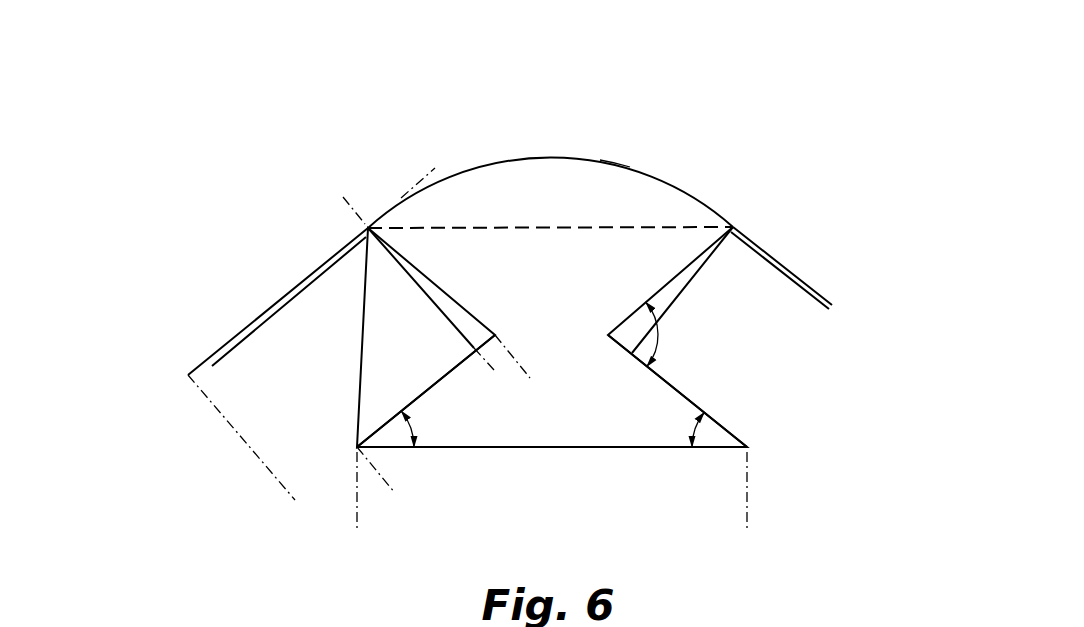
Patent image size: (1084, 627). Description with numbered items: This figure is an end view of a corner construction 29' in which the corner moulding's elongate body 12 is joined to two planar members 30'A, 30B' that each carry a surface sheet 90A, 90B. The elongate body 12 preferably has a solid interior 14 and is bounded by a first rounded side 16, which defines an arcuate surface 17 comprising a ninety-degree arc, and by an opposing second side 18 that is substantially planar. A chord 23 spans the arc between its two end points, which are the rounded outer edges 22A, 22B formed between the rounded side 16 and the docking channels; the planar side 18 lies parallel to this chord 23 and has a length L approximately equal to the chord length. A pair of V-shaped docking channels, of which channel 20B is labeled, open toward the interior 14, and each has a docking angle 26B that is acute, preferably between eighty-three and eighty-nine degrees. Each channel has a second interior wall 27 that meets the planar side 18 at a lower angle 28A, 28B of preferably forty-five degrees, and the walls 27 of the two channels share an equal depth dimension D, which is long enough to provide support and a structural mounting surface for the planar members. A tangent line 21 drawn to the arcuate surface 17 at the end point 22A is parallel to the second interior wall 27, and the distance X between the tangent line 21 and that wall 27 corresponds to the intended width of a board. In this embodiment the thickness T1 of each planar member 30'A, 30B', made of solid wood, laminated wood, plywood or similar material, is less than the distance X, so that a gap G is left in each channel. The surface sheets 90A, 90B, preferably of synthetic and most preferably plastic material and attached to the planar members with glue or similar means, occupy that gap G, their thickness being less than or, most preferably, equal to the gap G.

The elongate body 12 is at (578, 360).
The interior 14 is at (539, 288).
The first rounded side 16 is at (678, 186).
The arcuate surface 17 is at (615, 163).
The second side 18 is at (611, 450).
The V-shaped docking channel 20B is at (706, 310).
The tangent line 21 is at (427, 177).
The rounded outer edge 22A is at (368, 227).
The rounded outer edge 22B is at (734, 226).
The chord 23 is at (500, 227).
The docking angle 26B is at (662, 334).
The second interior wall 27 is at (442, 378).
The lower angle 28A is at (415, 416).
The lower angle 28B is at (696, 414).
The corner construction 29' is at (615, 66).
The planar member 30'A is at (241, 437).
The planar member 30B' is at (831, 348).
The surface sheet 90A is at (240, 332).
The surface sheet 90B is at (824, 296).
The gap G is at (313, 322).
The thickness T1 is at (270, 320).
The distance X is at (208, 362).
The depth dimension D is at (389, 486).
The length L is at (747, 521).